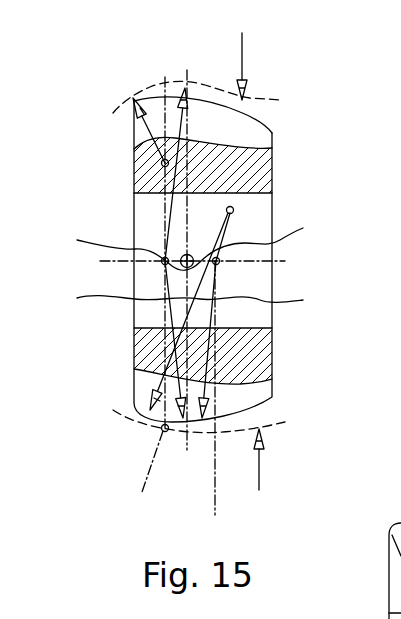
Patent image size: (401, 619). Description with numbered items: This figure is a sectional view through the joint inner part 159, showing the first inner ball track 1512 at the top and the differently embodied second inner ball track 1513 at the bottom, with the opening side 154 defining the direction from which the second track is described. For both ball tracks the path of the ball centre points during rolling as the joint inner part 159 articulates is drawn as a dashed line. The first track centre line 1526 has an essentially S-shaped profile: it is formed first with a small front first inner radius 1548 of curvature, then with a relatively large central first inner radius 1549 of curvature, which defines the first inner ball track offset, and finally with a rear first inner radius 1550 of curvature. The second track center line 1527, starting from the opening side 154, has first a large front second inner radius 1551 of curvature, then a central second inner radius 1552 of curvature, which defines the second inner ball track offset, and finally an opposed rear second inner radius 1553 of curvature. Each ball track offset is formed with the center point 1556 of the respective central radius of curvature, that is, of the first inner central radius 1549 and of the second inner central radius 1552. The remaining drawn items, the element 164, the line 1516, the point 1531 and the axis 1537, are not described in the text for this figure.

The opening side 154 is at (120, 81).
The joint inner part 159 is at (272, 168).
The adjacent element 164 is at (357, 603).
The first inner ball track 1512 is at (273, 133).
The second inner ball track 1513 is at (272, 360).
The lower wavy surface 1516 is at (169, 302).
The first track centre line 1526 is at (262, 98).
The second track center line 1527 is at (280, 422).
The center point 1531 is at (134, 260).
The optical axis 1537 is at (280, 262).
The front first inner radius of curvature 1548 is at (134, 135).
The central first inner radius of curvature 1549 is at (134, 197).
The rear first inner radius of curvature 1550 is at (242, 42).
The front second inner radius of curvature 1551 is at (140, 390).
The central second inner radius of curvature 1552 is at (272, 307).
The rear second inner radius of curvature 1553 is at (259, 470).
The center point 1556 is at (190, 240).